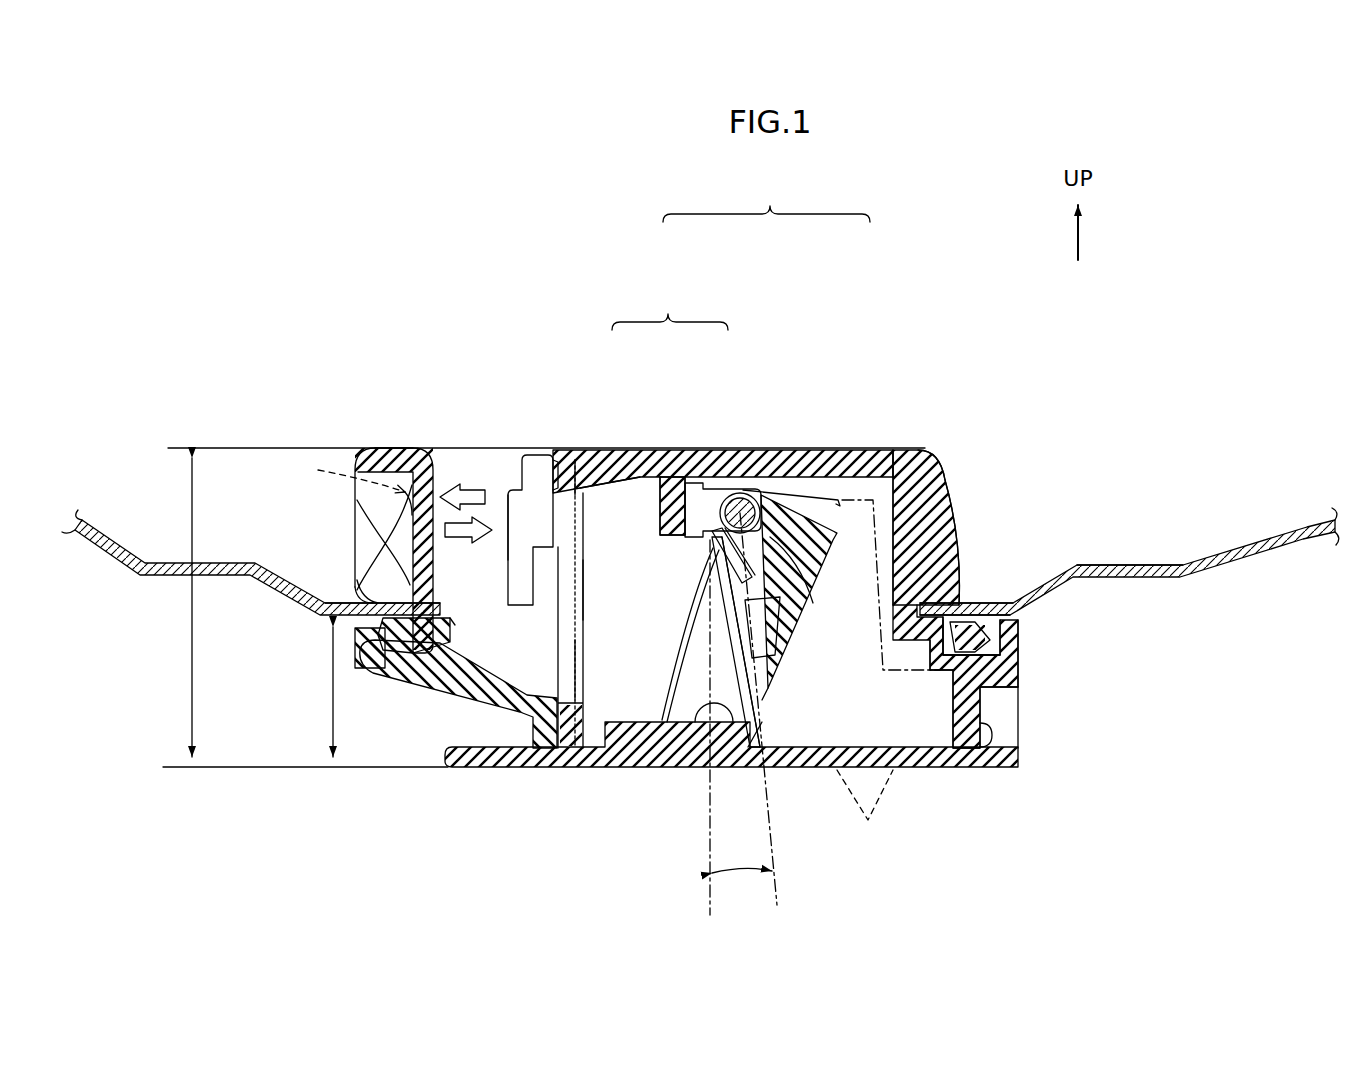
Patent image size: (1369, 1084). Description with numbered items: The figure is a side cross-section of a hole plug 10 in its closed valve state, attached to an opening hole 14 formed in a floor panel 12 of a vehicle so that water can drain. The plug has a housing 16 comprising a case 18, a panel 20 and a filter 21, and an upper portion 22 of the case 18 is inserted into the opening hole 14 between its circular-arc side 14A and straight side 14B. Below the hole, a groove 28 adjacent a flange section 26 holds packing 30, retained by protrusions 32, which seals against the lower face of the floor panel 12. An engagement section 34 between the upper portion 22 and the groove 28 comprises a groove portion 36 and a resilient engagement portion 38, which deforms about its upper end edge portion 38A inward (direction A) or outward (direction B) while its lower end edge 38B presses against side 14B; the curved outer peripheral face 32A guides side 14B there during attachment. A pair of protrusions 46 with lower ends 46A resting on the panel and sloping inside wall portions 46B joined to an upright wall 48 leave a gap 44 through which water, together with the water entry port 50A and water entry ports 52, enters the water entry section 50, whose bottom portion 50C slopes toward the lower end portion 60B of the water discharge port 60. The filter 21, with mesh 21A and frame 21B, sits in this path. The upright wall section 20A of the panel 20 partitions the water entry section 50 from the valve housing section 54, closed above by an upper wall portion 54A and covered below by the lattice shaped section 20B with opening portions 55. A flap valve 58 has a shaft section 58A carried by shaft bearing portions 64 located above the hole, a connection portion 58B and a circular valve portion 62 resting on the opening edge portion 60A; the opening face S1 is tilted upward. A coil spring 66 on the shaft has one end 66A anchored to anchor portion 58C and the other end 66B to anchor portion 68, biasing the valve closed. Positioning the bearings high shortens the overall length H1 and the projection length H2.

The hole plug 10 is at (968, 362).
The floor panel 12 is at (1255, 530).
The opening hole 14 is at (928, 600).
The side of opening hole 14A is at (920, 603).
The side of opening hole 14B is at (420, 612).
The housing 16 is at (670, 310).
The case 18 is at (708, 440).
The panel 20 is at (648, 450).
The upright wall section 20A is at (655, 560).
The lattice shaped section 20B is at (940, 770).
The filter 21 is at (605, 445).
The mesh 21A is at (582, 650).
The frame 21B is at (590, 495).
The upper portion of case 22 is at (965, 495).
The flange section 26 is at (1022, 655).
The groove 28 is at (1005, 672).
The packing 30 is at (985, 642).
The protrusion 32 is at (362, 652).
The outer peripheral face of protrusion 32A is at (358, 633).
The engagement section 34 is at (766, 204).
The groove portion 36 is at (972, 592).
The resilient engagement portion 38 is at (446, 468).
The upper end edge portion 38A is at (428, 446).
The lower end edge 38B is at (446, 628).
The gap 44 is at (345, 475).
The protrusion 46 is at (352, 537).
The lower end of protrusion 46A is at (405, 600).
The inside wall portion 46B is at (408, 545).
The upright wall 48 is at (470, 625).
The water entry section 50 is at (527, 450).
The water entry port 50A is at (550, 455).
The bottom portion of water entry section 50C is at (500, 700).
The water entry port 52 is at (512, 460).
The valve housing section 54 is at (908, 448).
The upper wall portion 54A is at (800, 450).
The opening portion 55 is at (865, 811).
The flap valve 58 is at (785, 490).
The shaft section 58A is at (770, 470).
The connection portion 58B is at (804, 591).
The anchor portion 58C is at (712, 578).
The water discharge port 60 is at (765, 668).
The opening edge portion 60A is at (770, 765).
The lower end portion of water discharge port 60B is at (695, 740).
The valve portion 62 is at (777, 745).
The shaft bearing portion 64 is at (728, 455).
The coil spring 66 is at (801, 582).
The one end of coil spring 66A is at (740, 662).
The other end of coil spring 66B is at (828, 538).
The anchor portion 68 is at (891, 585).
The length of hole plug H1 is at (192, 607).
The projection length H2 is at (333, 696).
The opening face S1 is at (765, 680).
The arrow A direction A is at (480, 540).
The arrow B direction B is at (478, 492).